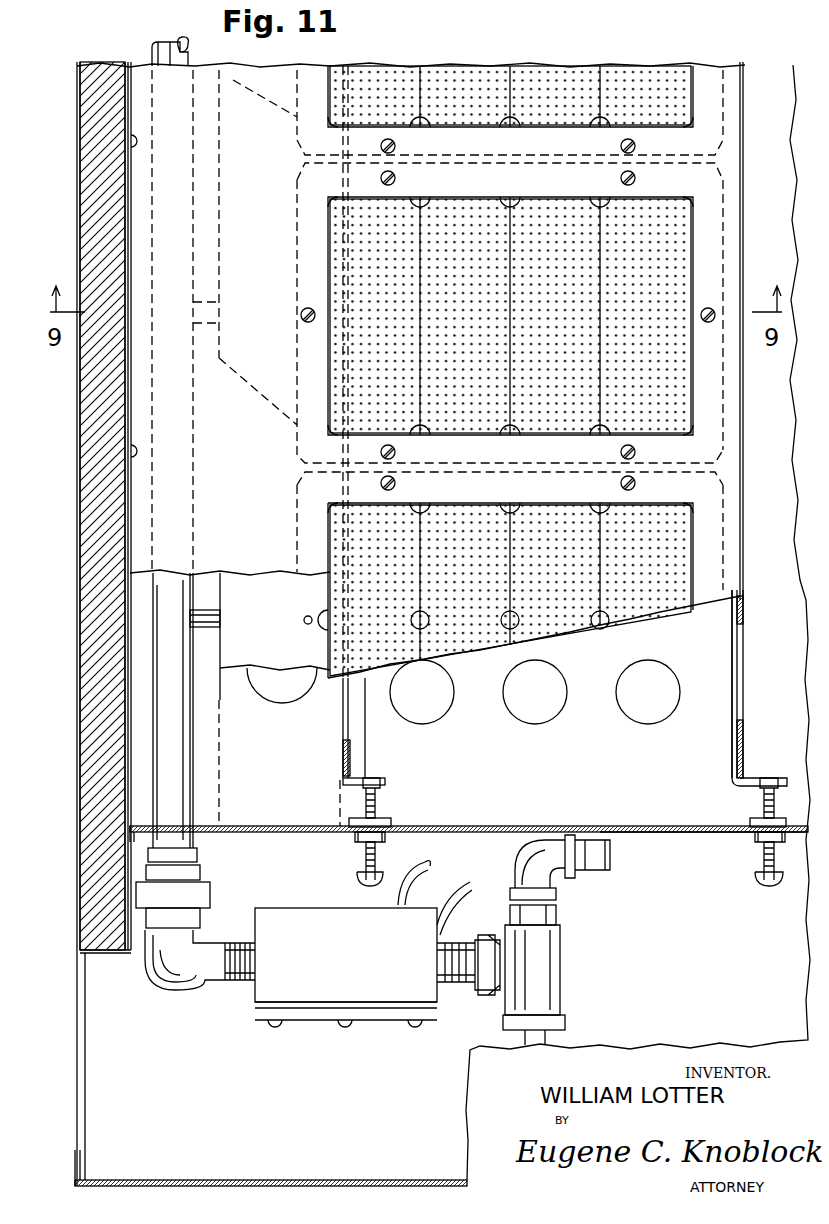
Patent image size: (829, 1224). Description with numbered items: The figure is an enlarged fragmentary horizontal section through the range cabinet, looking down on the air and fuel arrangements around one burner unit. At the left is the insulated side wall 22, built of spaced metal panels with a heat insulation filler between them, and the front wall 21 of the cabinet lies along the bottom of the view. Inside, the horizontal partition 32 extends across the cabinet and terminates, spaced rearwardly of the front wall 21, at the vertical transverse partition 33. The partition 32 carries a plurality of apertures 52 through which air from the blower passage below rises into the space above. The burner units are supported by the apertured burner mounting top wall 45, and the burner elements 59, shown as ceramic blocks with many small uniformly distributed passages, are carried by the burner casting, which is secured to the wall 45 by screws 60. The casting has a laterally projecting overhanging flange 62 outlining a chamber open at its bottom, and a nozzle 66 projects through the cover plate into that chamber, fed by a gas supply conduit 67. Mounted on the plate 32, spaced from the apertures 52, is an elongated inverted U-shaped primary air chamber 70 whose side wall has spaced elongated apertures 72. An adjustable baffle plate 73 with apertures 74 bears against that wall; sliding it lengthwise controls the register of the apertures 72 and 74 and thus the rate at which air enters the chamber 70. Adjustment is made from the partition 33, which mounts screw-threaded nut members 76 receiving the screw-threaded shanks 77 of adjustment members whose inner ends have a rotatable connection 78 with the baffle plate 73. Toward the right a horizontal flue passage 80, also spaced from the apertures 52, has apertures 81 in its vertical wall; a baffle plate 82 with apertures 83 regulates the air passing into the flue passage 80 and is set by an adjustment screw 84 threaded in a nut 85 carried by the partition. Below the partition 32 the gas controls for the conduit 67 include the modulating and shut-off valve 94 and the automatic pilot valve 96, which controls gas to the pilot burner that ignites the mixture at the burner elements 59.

The front wall 21 is at (173, 1178).
The side wall 22 is at (78, 614).
The horizontal partition 32 is at (469, 816).
The vertical transverse partition 33 is at (640, 832).
The burner mounting top wall 45 is at (712, 78).
The apertures 52 is at (560, 706).
The burner elements 59 is at (534, 200).
The screws 60 is at (394, 482).
The overhanging flange 62 is at (237, 665).
The nozzle 66 is at (220, 618).
The gas supply conduit 67 is at (175, 797).
The primary air chamber 70 is at (349, 782).
The elongated apertures 72 is at (343, 717).
The adjustable baffle plate 73 is at (350, 752).
The apertures 74 is at (348, 728).
The nut members 76 is at (362, 838).
The screw-threaded shanks 77 is at (378, 805).
The rotatable connection 78 is at (385, 780).
The horizontal flue passage 80 is at (738, 750).
The apertures 81 is at (737, 742).
The baffle plate 82 is at (745, 742).
The apertures 83 is at (743, 708).
The adjustment screw 84 is at (768, 874).
The nut 85 is at (756, 838).
The modulating and shut-off valve 94 is at (530, 955).
The automatic pilot valve 96 is at (292, 915).